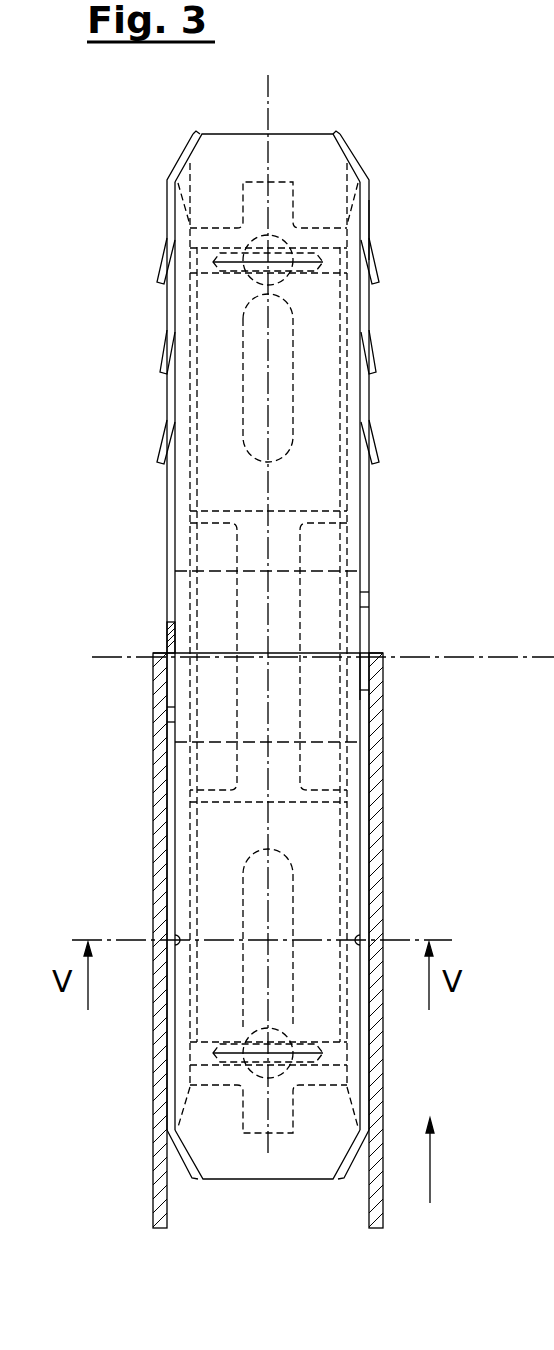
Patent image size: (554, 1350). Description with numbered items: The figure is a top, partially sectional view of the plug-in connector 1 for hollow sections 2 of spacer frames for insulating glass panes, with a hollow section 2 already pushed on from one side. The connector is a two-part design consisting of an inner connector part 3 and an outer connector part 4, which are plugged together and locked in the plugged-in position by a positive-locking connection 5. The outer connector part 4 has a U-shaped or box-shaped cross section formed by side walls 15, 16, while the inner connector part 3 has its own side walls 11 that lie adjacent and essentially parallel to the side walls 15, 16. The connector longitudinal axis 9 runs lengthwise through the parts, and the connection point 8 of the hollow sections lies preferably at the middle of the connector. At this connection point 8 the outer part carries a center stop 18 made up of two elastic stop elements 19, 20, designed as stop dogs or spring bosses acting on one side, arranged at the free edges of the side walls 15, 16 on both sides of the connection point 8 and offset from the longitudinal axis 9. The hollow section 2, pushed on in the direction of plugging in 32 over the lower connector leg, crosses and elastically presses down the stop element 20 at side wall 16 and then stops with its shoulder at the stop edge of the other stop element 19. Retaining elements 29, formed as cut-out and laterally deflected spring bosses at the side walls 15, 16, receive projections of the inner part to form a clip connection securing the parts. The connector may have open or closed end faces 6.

The plug-in connector 1 is at (362, 152).
The hollow section 2 is at (158, 1136).
The inner connector part 3 is at (305, 342).
The outer connector part 4 is at (363, 228).
The positive-locking connection 5 is at (167, 933).
The end face 6 is at (295, 155).
The connection point 8 is at (505, 657).
The connector longitudinal axis 9 is at (268, 95).
The side wall of inner connector part 11 is at (353, 829).
The side wall 15 is at (168, 534).
The side wall 16 is at (367, 523).
The center stop 18 is at (137, 663).
The stop element 19 is at (160, 651).
The stop element 20 is at (365, 670).
The retaining element 29 is at (158, 276).
The direction of plugging in 32 is at (430, 1153).